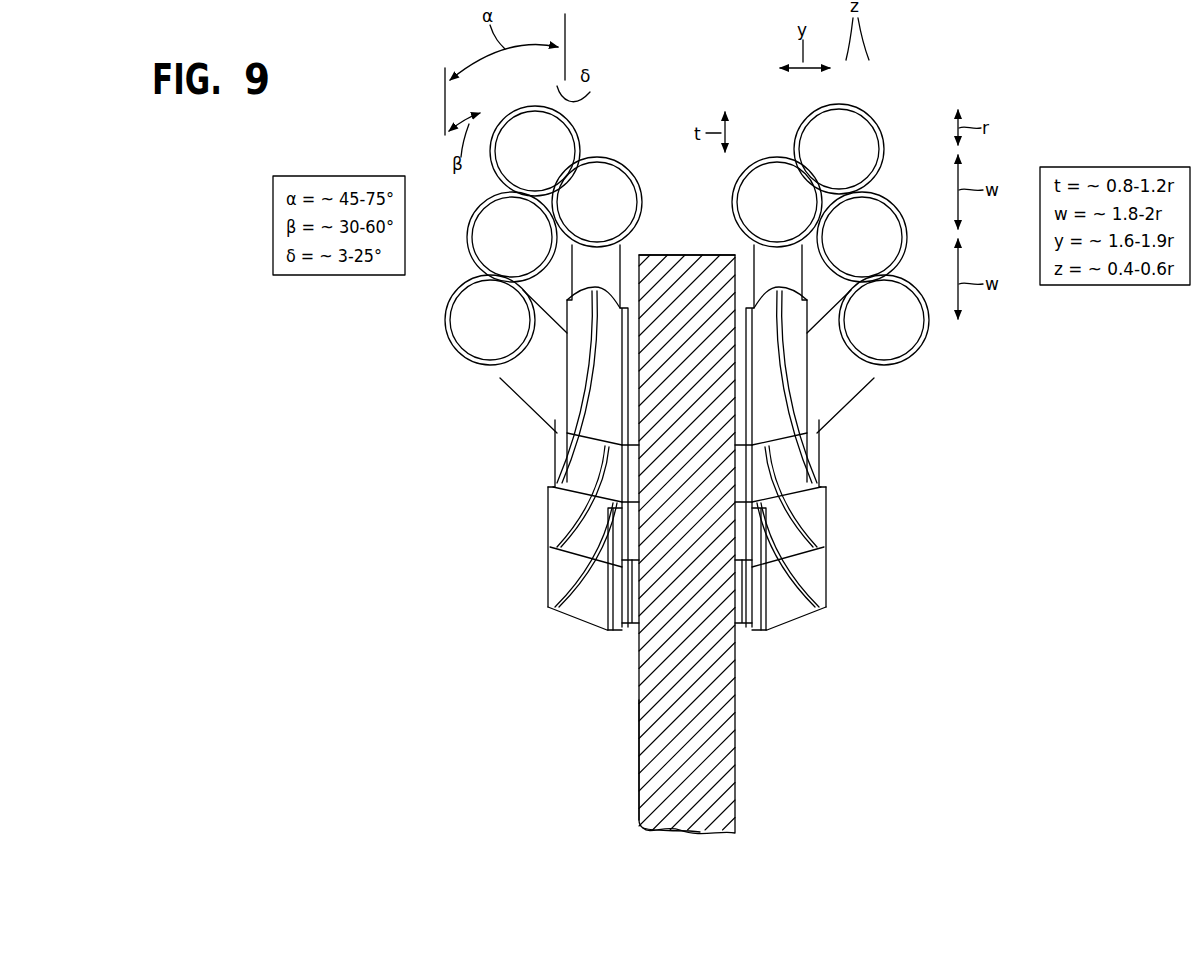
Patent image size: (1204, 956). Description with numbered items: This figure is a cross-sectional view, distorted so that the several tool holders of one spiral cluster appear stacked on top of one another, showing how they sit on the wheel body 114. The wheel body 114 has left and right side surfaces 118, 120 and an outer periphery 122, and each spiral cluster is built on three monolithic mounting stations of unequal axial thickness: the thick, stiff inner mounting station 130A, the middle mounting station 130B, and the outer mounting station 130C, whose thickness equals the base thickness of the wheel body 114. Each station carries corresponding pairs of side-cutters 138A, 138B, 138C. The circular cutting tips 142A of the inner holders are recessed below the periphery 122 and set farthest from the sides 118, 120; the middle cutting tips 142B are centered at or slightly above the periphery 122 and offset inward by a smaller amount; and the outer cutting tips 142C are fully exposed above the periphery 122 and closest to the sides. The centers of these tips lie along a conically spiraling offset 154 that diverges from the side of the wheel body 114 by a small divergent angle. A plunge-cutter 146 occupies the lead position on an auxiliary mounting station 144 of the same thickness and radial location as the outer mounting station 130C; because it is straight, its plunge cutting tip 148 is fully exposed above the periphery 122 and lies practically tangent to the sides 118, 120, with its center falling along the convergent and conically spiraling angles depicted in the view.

The wheel body 114 is at (700, 822).
The side surface of wheel body 118 is at (737, 735).
The side surface of wheel body 120 is at (638, 760).
The outer periphery 122 is at (688, 251).
The inner mounting station 130A is at (630, 629).
The middle mounting station 130B is at (622, 526).
The outer mounting station 130C is at (632, 477).
The side-cutter 138A is at (542, 608).
The side-cutter 138B is at (546, 484).
The side-cutter 138C is at (560, 437).
The cutting tip of inner tool holder 142A is at (464, 332).
The cutting tip of middle tool holder 142B is at (485, 249).
The cutting tip of outer tool holder 142C is at (509, 163).
The auxiliary mounting station 144 is at (630, 397).
The plunge-cutter 146 is at (565, 274).
The plunge cutting tip 148 is at (579, 214).
The conically spiraling offset 154 is at (470, 401).